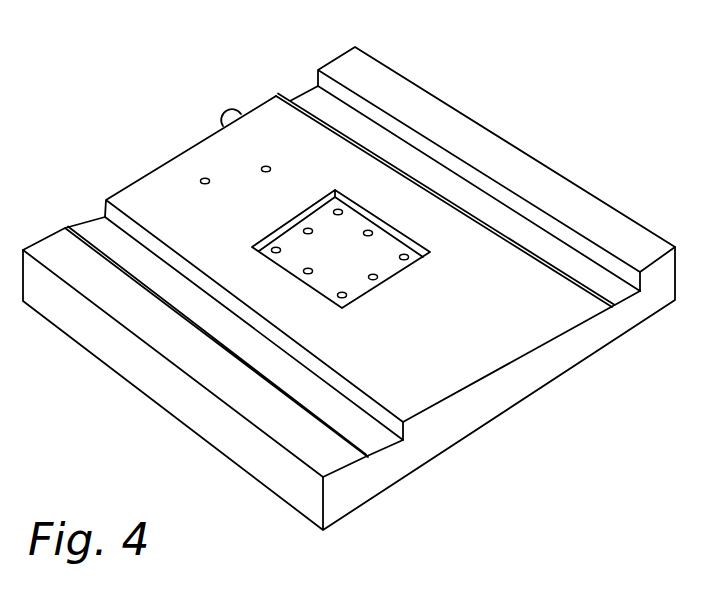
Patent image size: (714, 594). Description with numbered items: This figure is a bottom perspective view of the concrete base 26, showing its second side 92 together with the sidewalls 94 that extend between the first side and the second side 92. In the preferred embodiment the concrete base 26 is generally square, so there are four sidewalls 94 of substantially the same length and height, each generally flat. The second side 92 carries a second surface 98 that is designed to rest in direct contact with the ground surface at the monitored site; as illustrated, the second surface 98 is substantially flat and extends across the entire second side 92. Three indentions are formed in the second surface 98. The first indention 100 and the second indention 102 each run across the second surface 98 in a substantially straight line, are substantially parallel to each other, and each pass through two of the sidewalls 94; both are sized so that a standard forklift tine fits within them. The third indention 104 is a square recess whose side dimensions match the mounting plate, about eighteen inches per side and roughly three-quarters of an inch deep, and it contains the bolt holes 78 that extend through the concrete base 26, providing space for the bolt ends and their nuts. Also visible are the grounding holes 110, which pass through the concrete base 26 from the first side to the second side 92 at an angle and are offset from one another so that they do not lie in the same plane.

The concrete base 26 is at (499, 155).
The bolt holes 78 is at (276, 250).
The second side 92 is at (281, 131).
The sidewalls 94 is at (162, 381).
The second surface 98 is at (479, 287).
The first indention 100 is at (559, 252).
The second indention 102 is at (303, 379).
The third indention 104 is at (385, 247).
The grounding holes 110 is at (267, 168).